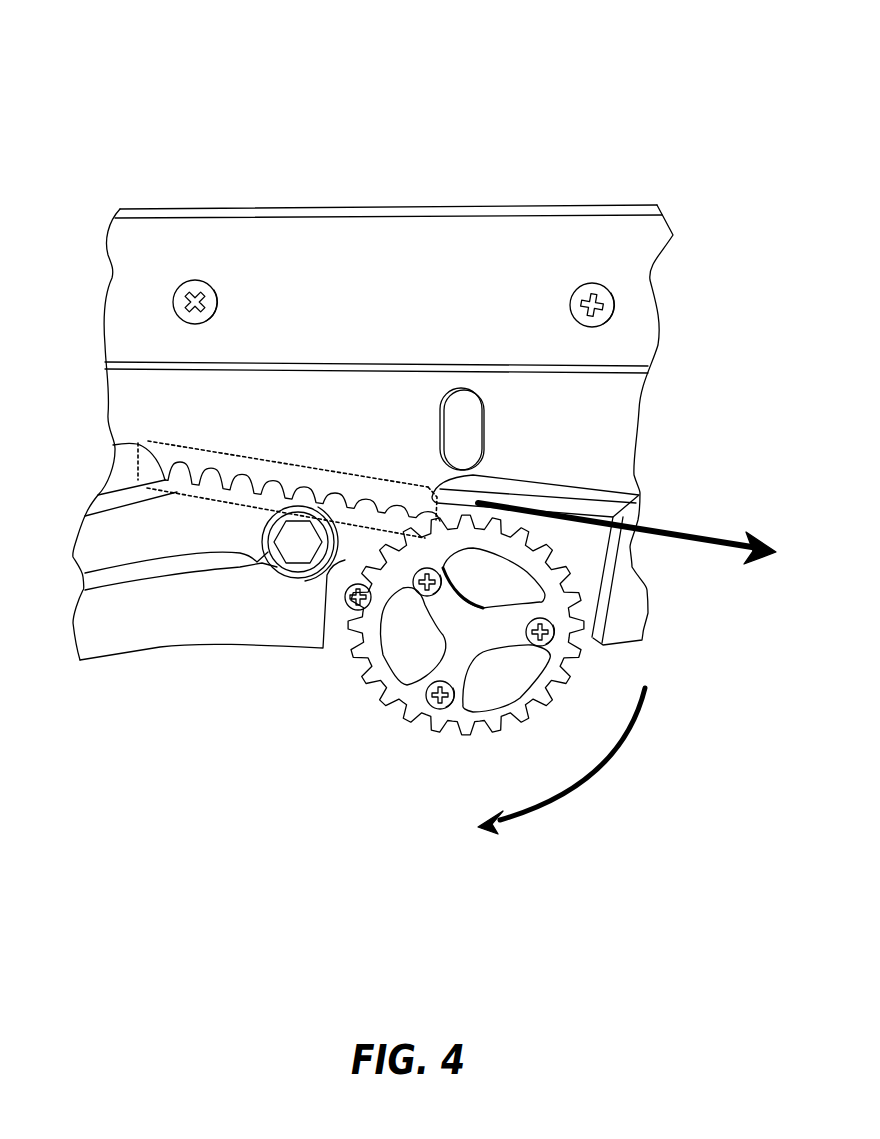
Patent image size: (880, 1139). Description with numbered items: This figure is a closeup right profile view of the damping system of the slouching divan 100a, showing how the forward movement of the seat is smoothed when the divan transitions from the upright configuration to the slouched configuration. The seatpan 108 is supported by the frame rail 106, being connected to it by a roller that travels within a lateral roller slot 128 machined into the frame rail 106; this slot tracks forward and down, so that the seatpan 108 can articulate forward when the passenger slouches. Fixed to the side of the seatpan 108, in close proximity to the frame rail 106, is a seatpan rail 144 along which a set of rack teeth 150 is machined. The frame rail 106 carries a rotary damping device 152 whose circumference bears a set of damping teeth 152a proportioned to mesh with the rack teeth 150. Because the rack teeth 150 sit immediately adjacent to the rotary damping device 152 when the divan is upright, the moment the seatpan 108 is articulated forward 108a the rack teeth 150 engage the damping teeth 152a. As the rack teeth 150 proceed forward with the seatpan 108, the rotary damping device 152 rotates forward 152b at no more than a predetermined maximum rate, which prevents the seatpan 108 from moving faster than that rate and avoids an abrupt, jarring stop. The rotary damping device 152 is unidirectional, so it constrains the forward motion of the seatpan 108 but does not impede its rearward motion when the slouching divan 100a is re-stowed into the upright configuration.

The slouching divan 100a is at (118, 61).
The frame rail 106 is at (227, 627).
The seatpan 108 is at (416, 230).
The forward articulation of the seatpan 108a is at (670, 532).
The lateral roller slot 128 is at (108, 553).
The seatpan rail 144 is at (612, 448).
The rack teeth 150 is at (133, 465).
The rotary damping device 152 is at (383, 688).
The damping teeth 152a is at (440, 696).
The forward rotation of the rotary damping device 152b is at (585, 805).